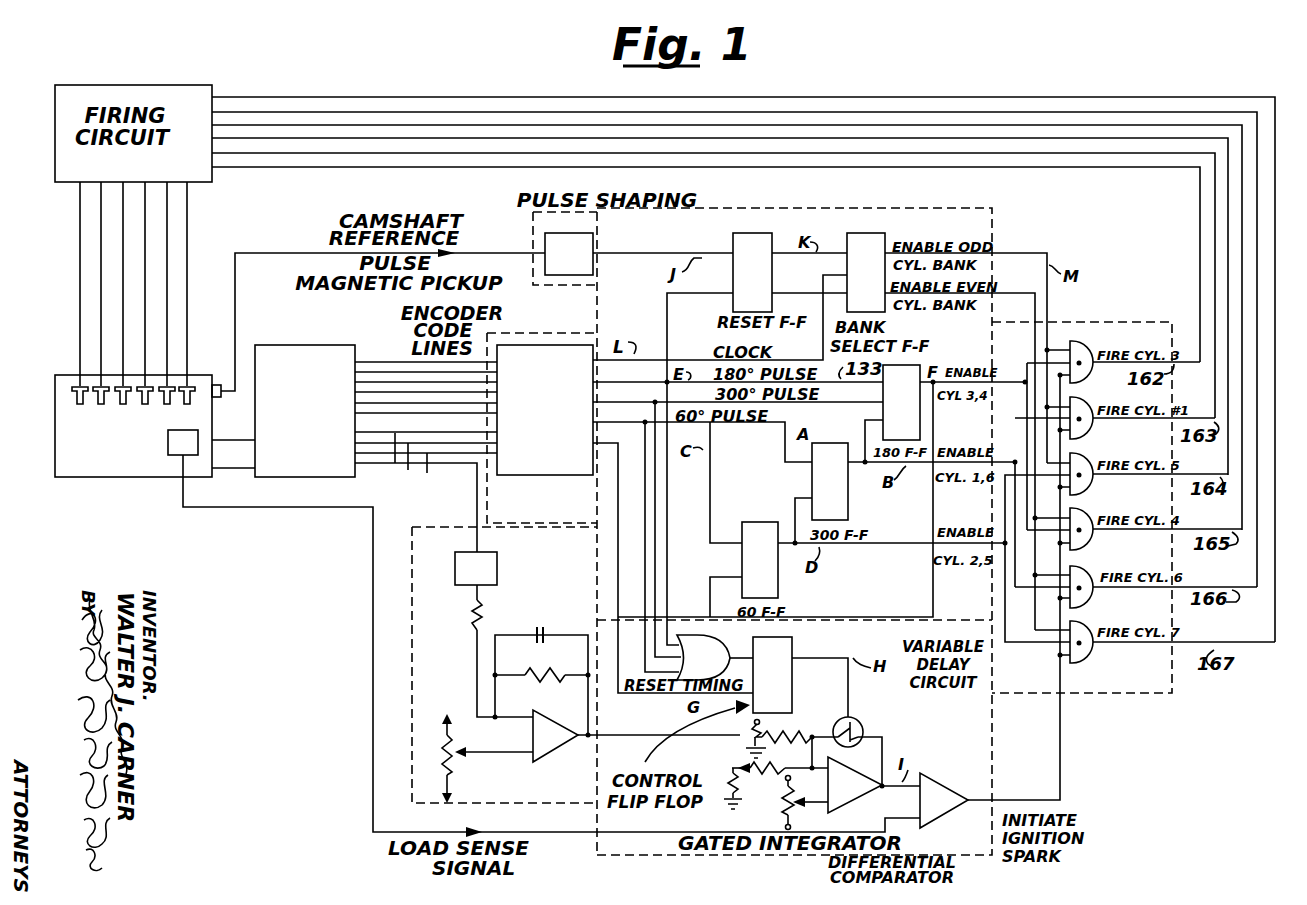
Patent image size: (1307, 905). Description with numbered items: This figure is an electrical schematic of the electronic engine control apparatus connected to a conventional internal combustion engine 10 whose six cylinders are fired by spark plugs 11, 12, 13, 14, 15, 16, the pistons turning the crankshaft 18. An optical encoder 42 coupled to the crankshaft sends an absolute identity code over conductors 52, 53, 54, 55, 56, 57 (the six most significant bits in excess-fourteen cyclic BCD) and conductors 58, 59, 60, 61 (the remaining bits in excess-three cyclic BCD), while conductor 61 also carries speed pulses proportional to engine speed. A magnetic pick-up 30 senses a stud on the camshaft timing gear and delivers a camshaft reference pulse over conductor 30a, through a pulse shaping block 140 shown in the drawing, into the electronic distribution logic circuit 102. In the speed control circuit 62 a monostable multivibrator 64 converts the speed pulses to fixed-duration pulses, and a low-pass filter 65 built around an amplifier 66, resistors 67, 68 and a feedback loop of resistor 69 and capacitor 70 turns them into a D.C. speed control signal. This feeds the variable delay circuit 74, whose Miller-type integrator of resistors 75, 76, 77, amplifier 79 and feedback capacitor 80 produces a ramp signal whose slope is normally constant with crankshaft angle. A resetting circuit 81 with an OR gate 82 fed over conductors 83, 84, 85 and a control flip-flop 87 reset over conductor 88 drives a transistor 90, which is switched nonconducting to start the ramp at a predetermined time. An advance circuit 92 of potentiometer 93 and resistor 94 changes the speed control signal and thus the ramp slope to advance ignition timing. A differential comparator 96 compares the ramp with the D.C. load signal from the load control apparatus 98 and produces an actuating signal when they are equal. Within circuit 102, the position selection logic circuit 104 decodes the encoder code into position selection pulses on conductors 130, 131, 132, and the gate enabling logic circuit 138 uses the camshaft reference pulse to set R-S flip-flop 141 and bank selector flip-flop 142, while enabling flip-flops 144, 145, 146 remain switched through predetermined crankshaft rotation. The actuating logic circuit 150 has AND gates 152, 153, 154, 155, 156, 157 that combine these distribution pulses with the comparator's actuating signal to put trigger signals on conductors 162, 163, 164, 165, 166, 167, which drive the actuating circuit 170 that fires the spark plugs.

The internal combustion engine 10 is at (66, 370).
The spark plug 11 is at (84, 405).
The spark plug 12 is at (105, 405).
The spark plug 13 is at (127, 405).
The spark plug 14 is at (145, 405).
The spark plug 15 is at (167, 405).
The spark plug 16 is at (190, 397).
The crankshaft 18 is at (235, 442).
The magnetic pick-up 30 is at (220, 384).
The conductor 30a is at (290, 255).
The optical encoder 42 is at (308, 342).
The conductor 52 is at (361, 362).
The conductor 53 is at (383, 372).
The conductor 54 is at (389, 382).
The conductor 55 is at (468, 392).
The conductor 56 is at (469, 403).
The conductor 57 is at (362, 413).
The conductor 58 is at (356, 437).
The conductor 59 is at (408, 462).
The conductor 60 is at (436, 473).
The conductor 61 is at (438, 453).
The speed control circuit 62 is at (410, 582).
The monostable multivibrator 64 is at (497, 565).
The low-pass filter 65 is at (476, 726).
The amplifier 66 is at (548, 748).
The resistor 67 is at (456, 772).
The resistor 68 is at (469, 620).
The resistor 69 is at (537, 684).
The capacitor 70 is at (542, 628).
The variable delay circuit 74 is at (980, 860).
The resistor 75 is at (738, 768).
The resistor 76 is at (786, 816).
The resistor 77 is at (780, 773).
The amplifier 79 is at (844, 803).
The feedback capacitor 80 is at (846, 745).
The resetting circuit 81 is at (645, 672).
The OR gate 82 is at (702, 643).
The conductor 83 is at (667, 542).
The conductor 84 is at (663, 561).
The conductor 85 is at (620, 594).
The control flip-flop 87 is at (792, 654).
The conductor 88 is at (620, 473).
The transistor 90 is at (848, 715).
The advance circuit 92 is at (830, 720).
The potentiometer 93 is at (752, 727).
The resistor 94 is at (788, 734).
The differential comparator 96 is at (931, 795).
The load control apparatus 98 is at (176, 459).
The electronic distribution logic circuit 102 is at (998, 213).
The position selection logic circuit 104 is at (562, 480).
The conductor 130 is at (696, 366).
The conductor 131 is at (785, 424).
The conductor 132 is at (711, 480).
The gate enabling logic circuit 138 is at (835, 564).
The pulse shaping circuit 140 is at (520, 205).
The R-S flip-flop 141 is at (733, 312).
The R-S bank selector flip-flop 142 is at (846, 270).
The enabling R-S flip-flop circuit 144 is at (933, 362).
The enabling R-S flip-flop circuit 145 is at (851, 498).
The enabling R-S flip-flop circuit 146 is at (754, 520).
The actuating logic circuit 150 is at (1176, 316).
The AND gate 152 is at (1076, 340).
The AND gate 153 is at (1080, 414).
The AND gate 154 is at (1082, 468).
The AND gate 155 is at (1084, 520).
The AND gate 156 is at (1084, 580).
The AND gate 157 is at (1084, 632).
The conductor 162 is at (222, 98).
The conductor 163 is at (258, 112).
The conductor 164 is at (292, 125).
The conductor 165 is at (248, 140).
The conductor 166 is at (288, 154).
The conductor 167 is at (223, 167).
The actuating circuit 170 is at (202, 184).